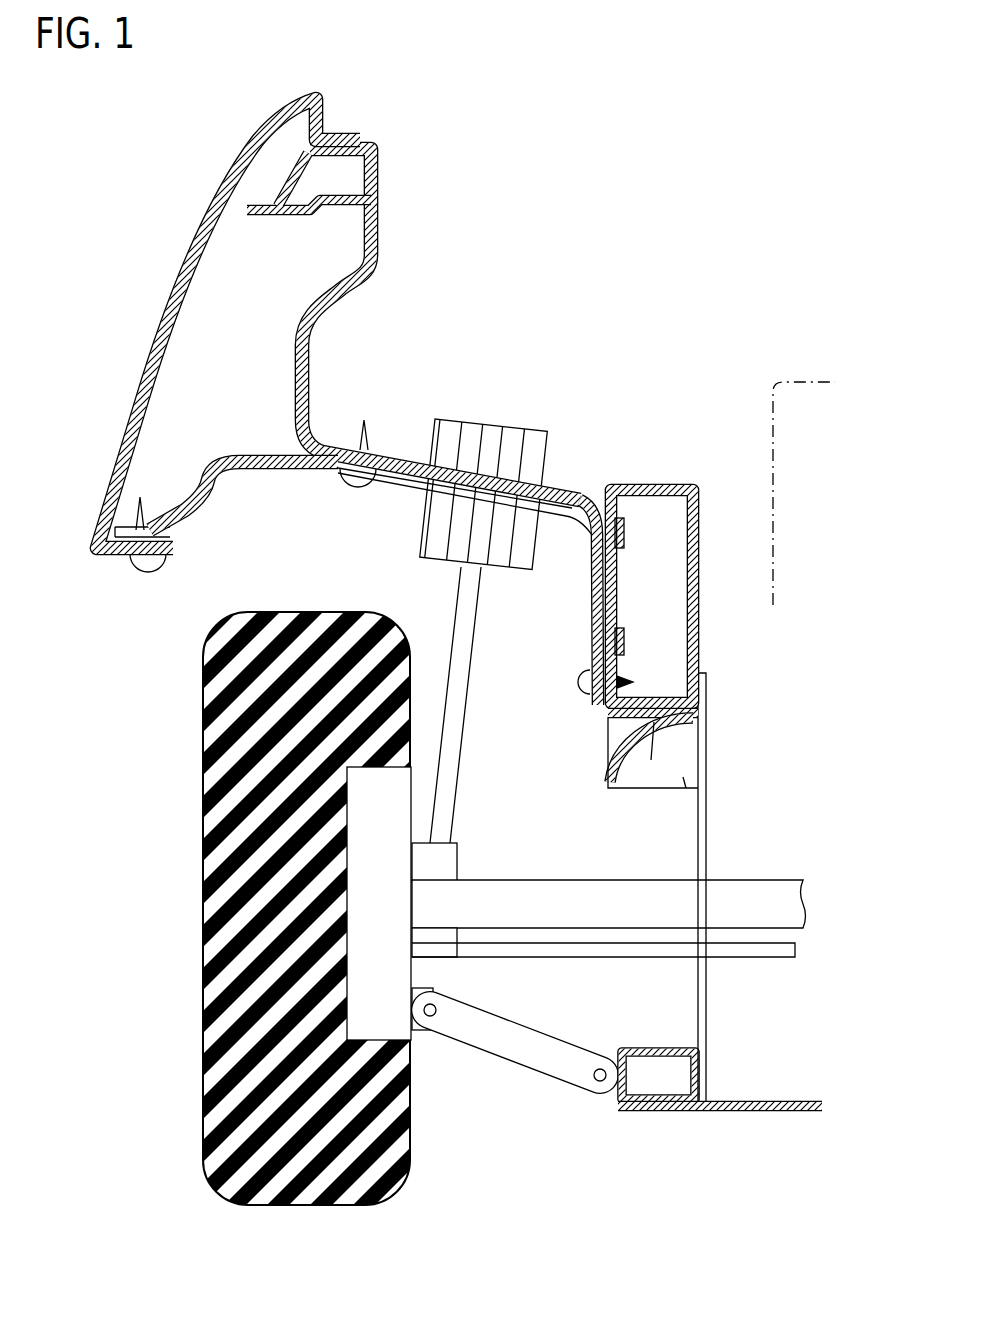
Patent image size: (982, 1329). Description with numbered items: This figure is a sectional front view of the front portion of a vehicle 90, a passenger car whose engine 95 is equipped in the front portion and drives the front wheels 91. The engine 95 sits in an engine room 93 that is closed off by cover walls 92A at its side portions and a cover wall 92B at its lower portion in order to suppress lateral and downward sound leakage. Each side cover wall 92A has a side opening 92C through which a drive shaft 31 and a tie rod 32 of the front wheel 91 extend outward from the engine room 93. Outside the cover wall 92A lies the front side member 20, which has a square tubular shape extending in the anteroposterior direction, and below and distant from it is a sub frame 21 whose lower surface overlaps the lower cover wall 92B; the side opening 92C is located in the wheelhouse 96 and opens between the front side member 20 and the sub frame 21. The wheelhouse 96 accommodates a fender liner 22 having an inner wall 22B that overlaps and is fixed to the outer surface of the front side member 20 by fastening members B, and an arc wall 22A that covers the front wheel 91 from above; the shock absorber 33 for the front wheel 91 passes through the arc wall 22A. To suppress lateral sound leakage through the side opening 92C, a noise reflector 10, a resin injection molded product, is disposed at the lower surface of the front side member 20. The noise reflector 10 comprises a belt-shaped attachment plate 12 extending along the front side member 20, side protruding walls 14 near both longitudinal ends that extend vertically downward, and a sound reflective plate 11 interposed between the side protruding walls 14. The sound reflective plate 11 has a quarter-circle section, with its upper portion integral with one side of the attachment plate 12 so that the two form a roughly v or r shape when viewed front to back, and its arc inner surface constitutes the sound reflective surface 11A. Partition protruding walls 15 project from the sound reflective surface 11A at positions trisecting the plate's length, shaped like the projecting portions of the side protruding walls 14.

The vehicle 90 is at (188, 180).
The front wheel 91 is at (200, 905).
The cover wall 92A is at (530, 625).
The cover wall 92B is at (810, 1098).
The side opening 92C is at (703, 830).
The engine room 93 is at (570, 340).
The engine 95 is at (808, 378).
The wheelhouse 96 is at (215, 578).
The fender liner 22 is at (195, 487).
The arc wall 22A is at (336, 452).
The inner wall 22B is at (598, 642).
The front side member 20 is at (698, 617).
The sub frame 21 is at (700, 1070).
The noise reflector 10 is at (713, 736).
The sound reflective plate 11 is at (692, 750).
The sound reflective surface 11A is at (651, 760).
The attachment plate 12 is at (693, 712).
The side protruding wall 14 is at (610, 738).
The partition protruding wall 15 is at (684, 778).
The drive shaft 31 is at (605, 918).
The tie rod 32 is at (548, 952).
The shock absorber 33 is at (455, 788).
The fastening member B is at (577, 680).